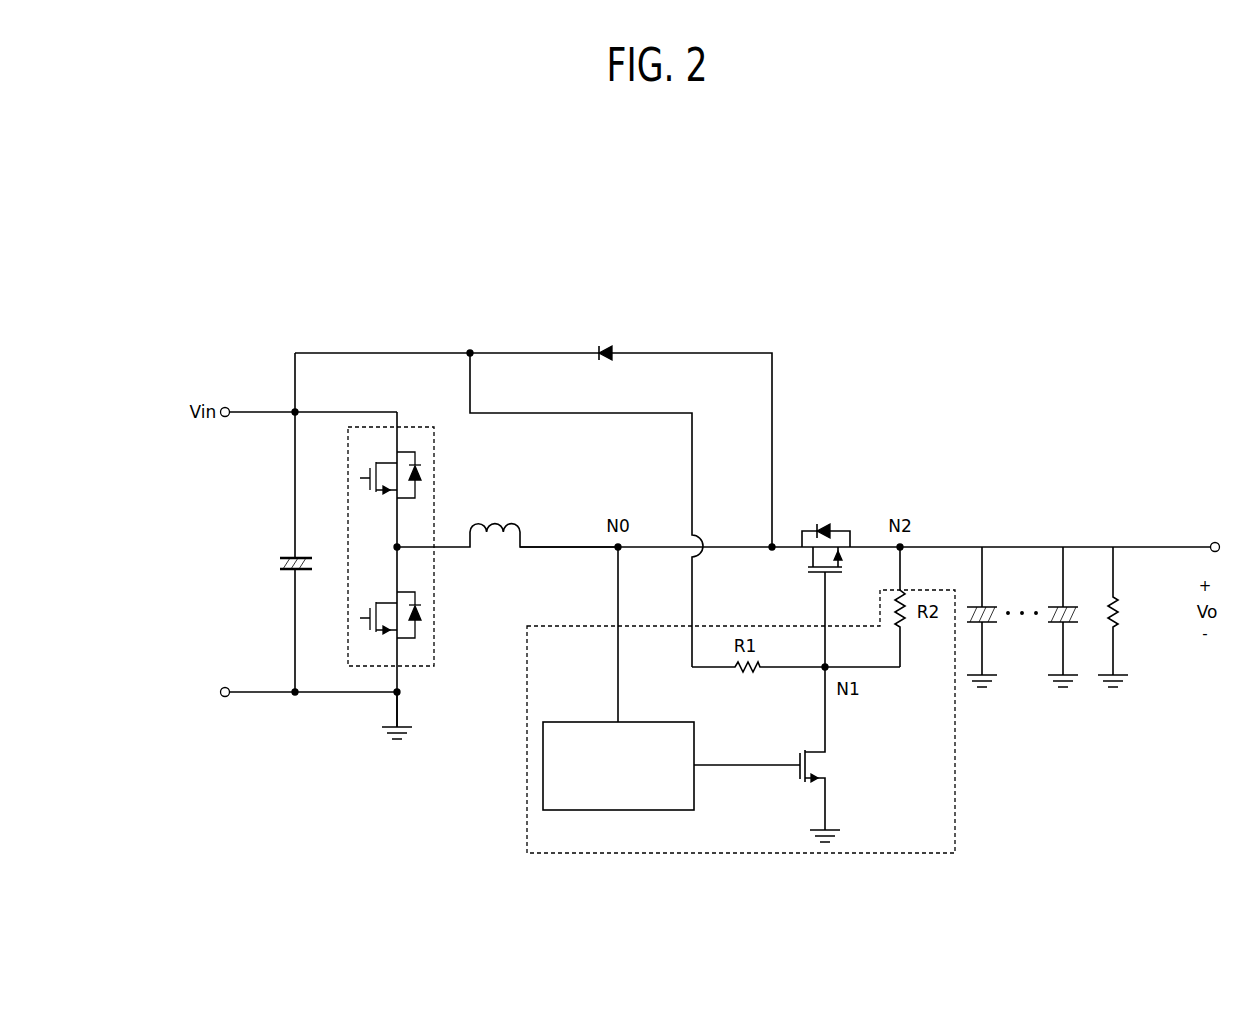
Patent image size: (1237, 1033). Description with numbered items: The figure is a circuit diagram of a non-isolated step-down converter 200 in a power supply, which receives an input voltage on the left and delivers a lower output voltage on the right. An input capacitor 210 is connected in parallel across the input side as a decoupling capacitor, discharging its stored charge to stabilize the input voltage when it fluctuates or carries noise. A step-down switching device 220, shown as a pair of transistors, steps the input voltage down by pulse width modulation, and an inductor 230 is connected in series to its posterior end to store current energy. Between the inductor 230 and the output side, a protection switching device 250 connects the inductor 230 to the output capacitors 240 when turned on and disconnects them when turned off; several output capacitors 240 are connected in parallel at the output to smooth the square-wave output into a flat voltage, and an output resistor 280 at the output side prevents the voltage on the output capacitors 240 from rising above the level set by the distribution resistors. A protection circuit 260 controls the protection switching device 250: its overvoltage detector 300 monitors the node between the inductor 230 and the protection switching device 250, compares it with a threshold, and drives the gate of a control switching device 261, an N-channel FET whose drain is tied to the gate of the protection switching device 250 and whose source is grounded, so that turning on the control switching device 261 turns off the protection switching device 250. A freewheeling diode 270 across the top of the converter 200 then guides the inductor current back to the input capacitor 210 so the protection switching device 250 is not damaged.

The converter 200 is at (920, 258).
The input capacitor 210 is at (280, 560).
The step-down switching device 220 is at (440, 592).
The inductor 230 is at (496, 520).
The output capacitor 240 is at (965, 604).
The protection switching device 250 is at (822, 527).
The protection circuit 260 is at (527, 836).
The control switching device 261 is at (828, 763).
The freewheeling diode 270 is at (606, 345).
The output resistor 280 is at (1120, 615).
The overvoltage detector 300 is at (543, 768).